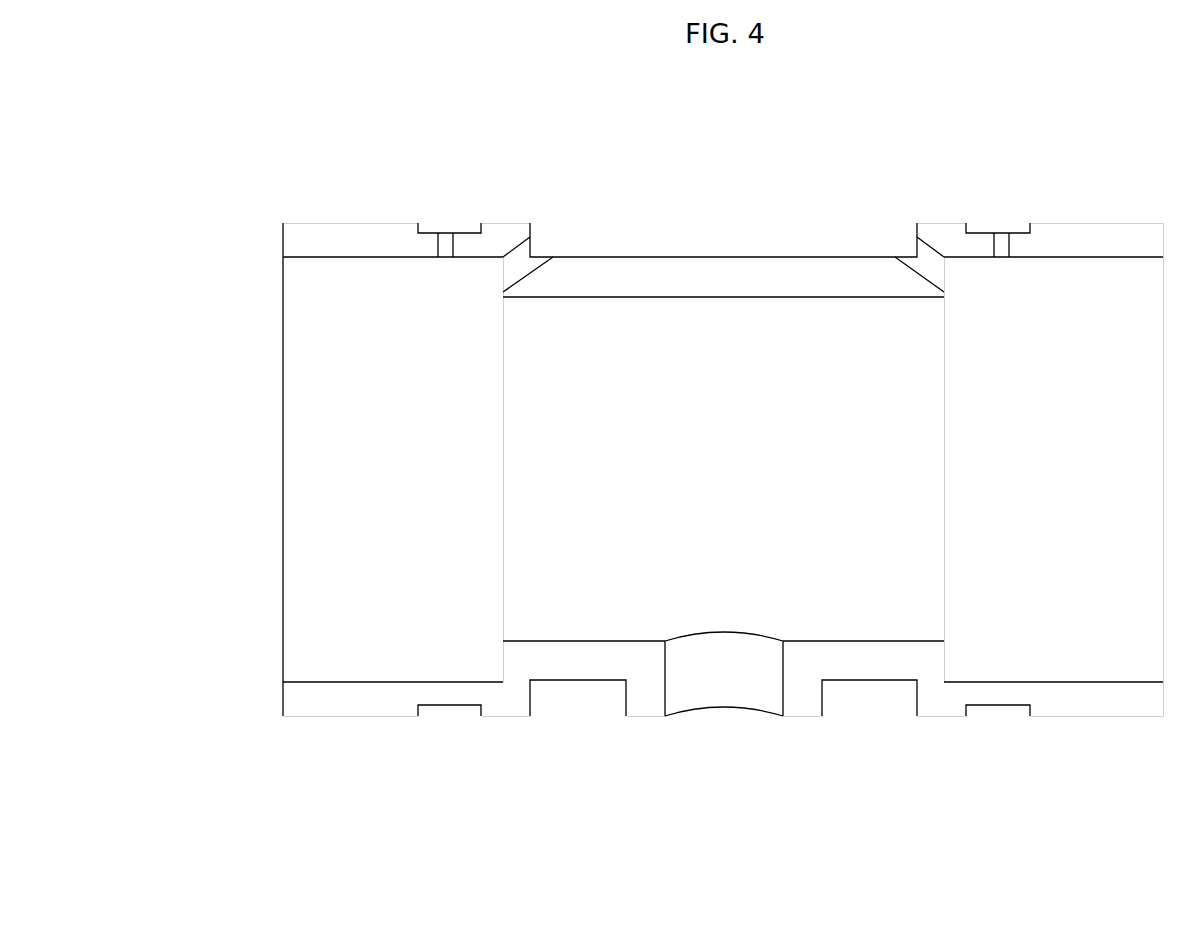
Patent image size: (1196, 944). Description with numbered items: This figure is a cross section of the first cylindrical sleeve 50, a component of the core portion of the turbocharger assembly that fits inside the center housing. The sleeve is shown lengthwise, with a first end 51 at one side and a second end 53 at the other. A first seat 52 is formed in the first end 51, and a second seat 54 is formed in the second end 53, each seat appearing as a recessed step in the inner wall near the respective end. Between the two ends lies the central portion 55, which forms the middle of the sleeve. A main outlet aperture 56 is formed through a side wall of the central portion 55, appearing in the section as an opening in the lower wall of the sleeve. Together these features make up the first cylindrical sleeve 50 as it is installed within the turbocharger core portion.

The first cylindrical sleeve 50 is at (338, 119).
The first end 51 is at (1120, 716).
The first seat 52 is at (951, 675).
The second end 53 is at (335, 716).
The second seat 54 is at (497, 676).
The central portion 55 is at (661, 522).
The main outlet aperture 56 is at (730, 680).